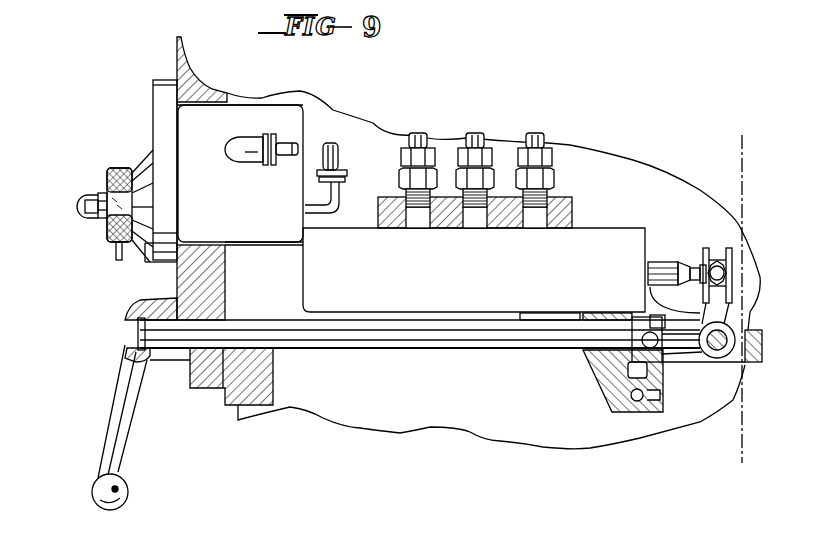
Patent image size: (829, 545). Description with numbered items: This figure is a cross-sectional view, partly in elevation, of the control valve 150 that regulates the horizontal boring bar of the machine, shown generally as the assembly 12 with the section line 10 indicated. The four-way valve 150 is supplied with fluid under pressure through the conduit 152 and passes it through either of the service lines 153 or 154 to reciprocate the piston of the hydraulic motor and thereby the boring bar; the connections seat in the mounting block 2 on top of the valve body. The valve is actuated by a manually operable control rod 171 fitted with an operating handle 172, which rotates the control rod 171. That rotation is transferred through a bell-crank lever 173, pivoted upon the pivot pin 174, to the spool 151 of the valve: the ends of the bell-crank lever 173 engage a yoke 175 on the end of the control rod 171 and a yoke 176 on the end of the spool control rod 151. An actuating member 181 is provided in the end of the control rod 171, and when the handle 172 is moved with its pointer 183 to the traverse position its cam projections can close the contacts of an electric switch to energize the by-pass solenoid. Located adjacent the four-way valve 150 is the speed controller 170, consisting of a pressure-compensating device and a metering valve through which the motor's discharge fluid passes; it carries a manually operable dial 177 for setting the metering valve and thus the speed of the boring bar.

The injector mounting block 2 is at (557, 200).
The section line 10 is at (742, 148).
The fuel injection pump assembly 12 is at (115, 317).
The 4-way valve 150 is at (585, 238).
The spool 151 is at (680, 260).
The conduit 152 is at (416, 134).
The service line 153 is at (540, 135).
The service line 154 is at (478, 135).
The speed controller 170 is at (297, 90).
The control rod 171 is at (406, 348).
The operating handle 172 is at (125, 460).
The bell-crank lever 173 is at (724, 360).
The pivot pin 174 is at (727, 330).
The yoke 175 is at (652, 362).
The yoke 176 is at (718, 238).
The manually operable dial 177 is at (140, 174).
The actuating member 181 is at (698, 305).
The pointer 183 is at (172, 304).